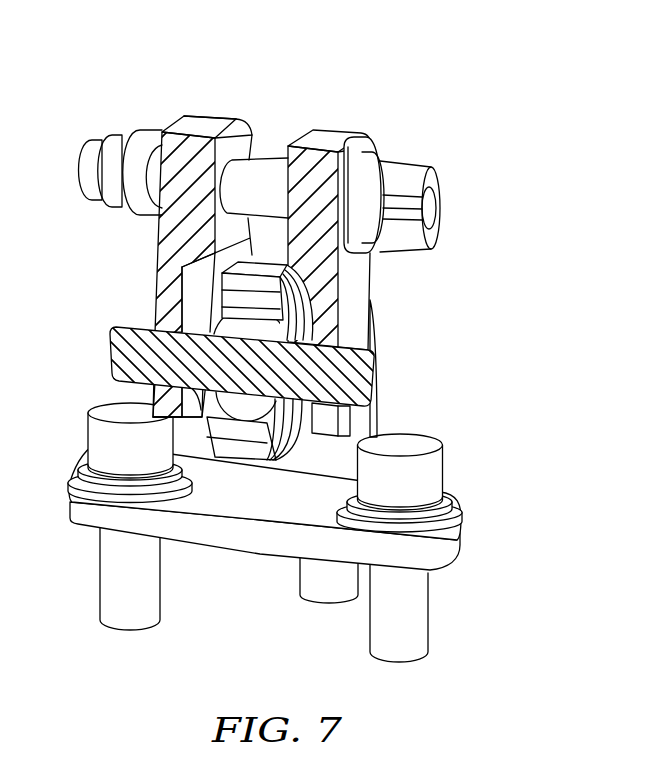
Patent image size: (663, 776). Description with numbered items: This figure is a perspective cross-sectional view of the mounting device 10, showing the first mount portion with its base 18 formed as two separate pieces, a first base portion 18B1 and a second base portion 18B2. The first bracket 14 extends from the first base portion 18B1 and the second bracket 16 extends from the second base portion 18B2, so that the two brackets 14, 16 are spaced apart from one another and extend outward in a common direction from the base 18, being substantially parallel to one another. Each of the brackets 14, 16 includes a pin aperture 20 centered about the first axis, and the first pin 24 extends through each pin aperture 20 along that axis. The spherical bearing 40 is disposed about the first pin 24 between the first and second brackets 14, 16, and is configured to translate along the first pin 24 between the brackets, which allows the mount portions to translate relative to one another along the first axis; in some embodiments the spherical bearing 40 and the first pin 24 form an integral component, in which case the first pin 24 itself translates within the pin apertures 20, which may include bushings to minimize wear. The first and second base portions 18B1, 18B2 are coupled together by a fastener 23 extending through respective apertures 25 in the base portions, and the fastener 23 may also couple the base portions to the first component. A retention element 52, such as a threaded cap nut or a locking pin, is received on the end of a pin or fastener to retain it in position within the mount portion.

The mounting device 10 is at (446, 107).
The first bracket 14 is at (175, 244).
The second bracket 16 is at (360, 273).
The base 18 is at (223, 105).
The first base portion 18B1 is at (182, 127).
The second base portion 18B2 is at (346, 142).
The pin aperture 20 is at (375, 345).
The fastener 23 is at (440, 184).
The first pin 24 is at (370, 387).
The aperture 25 is at (242, 178).
The spherical bearing 40 is at (247, 398).
The retention element 52 is at (140, 136).